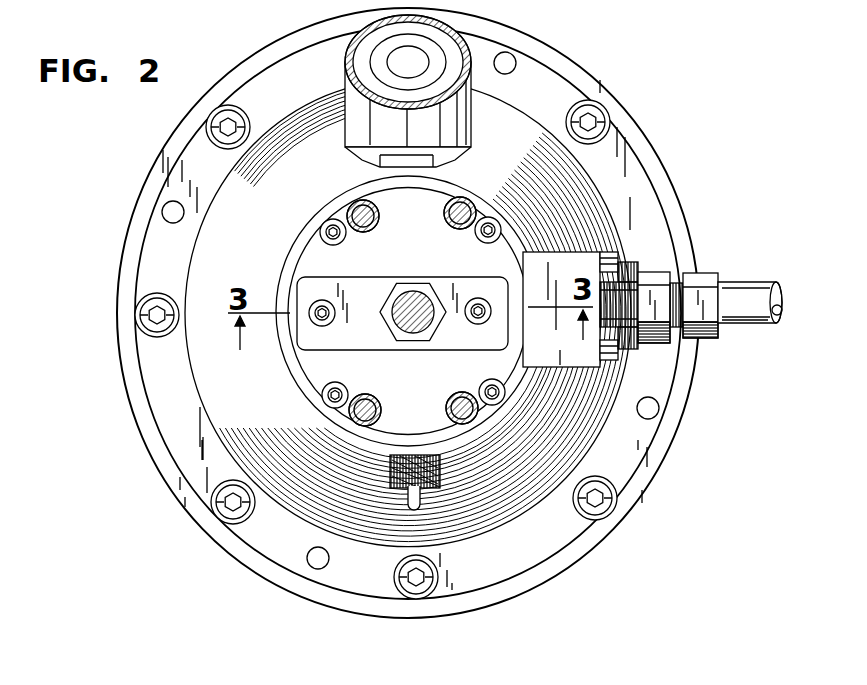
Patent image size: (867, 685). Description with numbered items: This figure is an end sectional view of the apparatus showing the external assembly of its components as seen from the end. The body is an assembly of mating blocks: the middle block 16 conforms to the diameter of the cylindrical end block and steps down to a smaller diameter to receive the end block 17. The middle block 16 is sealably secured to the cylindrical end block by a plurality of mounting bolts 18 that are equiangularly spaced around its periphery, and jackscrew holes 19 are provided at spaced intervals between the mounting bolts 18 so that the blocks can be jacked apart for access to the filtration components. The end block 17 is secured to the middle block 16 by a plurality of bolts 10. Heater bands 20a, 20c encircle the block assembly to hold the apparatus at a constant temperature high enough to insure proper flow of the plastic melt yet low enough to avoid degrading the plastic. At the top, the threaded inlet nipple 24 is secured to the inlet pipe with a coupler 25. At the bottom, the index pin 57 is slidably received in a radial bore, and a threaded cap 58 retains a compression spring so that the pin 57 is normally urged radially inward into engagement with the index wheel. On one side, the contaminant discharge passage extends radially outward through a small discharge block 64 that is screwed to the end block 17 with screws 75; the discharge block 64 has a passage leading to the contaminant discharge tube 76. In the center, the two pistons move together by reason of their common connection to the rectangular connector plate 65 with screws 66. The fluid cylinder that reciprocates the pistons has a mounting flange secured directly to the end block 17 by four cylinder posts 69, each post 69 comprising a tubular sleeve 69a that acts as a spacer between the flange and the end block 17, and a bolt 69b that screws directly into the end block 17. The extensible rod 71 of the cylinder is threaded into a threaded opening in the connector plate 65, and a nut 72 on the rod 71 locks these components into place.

The bolts 10 is at (322, 228).
The middle block 16 is at (645, 128).
The end block 17 is at (294, 375).
The mounting bolts 18 is at (208, 120).
The jackscrew holes 19 is at (513, 60).
The heater band 20a is at (670, 153).
The heater band 20c is at (298, 399).
The threaded inlet nipple 24 is at (367, 147).
The coupler 25 is at (349, 71).
The index pin 57 is at (410, 502).
The threaded cap 58 is at (395, 472).
The discharge block 64 is at (570, 258).
The connector plate 65 is at (363, 287).
The screws 66 is at (322, 300).
The cylinder posts 69 is at (414, 323).
The tubular sleeve 69a is at (450, 220).
The bolt 69b is at (448, 208).
The extensible rod 71 is at (403, 343).
The nut 72 is at (418, 338).
The screws 75 is at (619, 257).
The contaminant discharge tube 76 is at (738, 292).